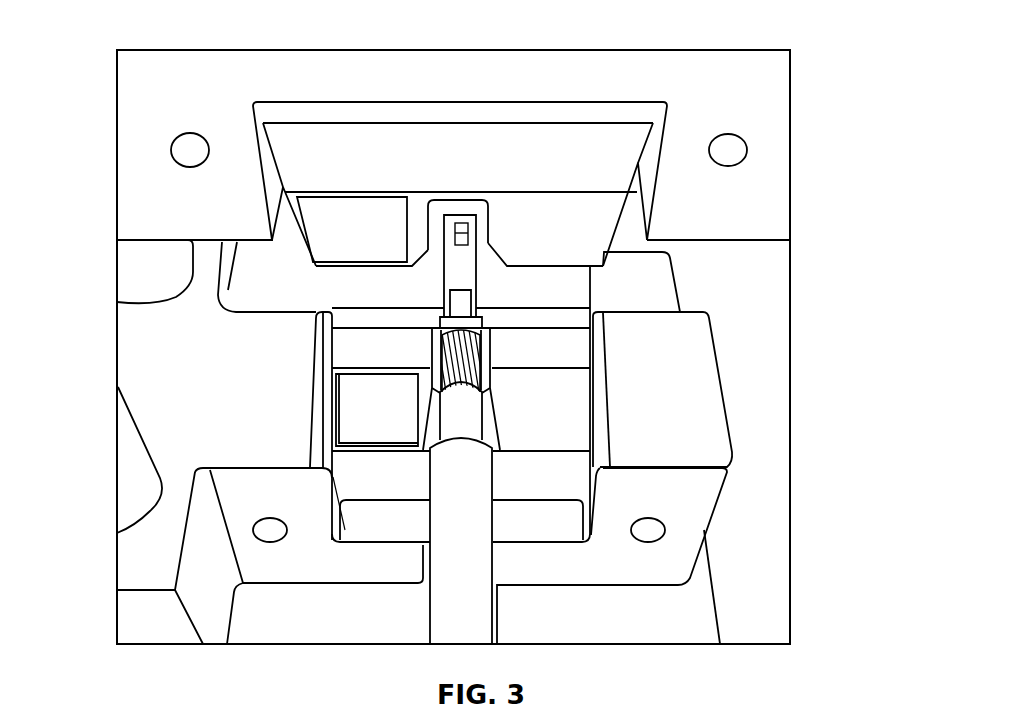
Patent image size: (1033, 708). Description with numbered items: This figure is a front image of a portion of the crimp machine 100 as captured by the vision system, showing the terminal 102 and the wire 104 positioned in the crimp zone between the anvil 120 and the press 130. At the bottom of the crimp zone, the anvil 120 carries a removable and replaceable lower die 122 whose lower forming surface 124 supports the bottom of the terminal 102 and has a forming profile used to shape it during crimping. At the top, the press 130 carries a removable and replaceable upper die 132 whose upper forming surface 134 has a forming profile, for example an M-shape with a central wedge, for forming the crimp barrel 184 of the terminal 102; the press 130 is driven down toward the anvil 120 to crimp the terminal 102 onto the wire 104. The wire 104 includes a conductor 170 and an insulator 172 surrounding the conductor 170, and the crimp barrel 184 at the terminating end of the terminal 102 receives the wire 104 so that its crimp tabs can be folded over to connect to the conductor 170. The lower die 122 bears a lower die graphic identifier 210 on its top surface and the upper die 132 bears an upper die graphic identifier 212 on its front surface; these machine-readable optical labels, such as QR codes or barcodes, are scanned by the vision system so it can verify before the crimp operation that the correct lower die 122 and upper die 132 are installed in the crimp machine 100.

The crimp machine 100 is at (797, 38).
The press 130 is at (767, 113).
The upper die 132 is at (597, 202).
The upper forming surface 134 is at (482, 247).
The terminal 102 is at (457, 265).
The upper die graphic identifier 212 is at (306, 243).
The crimp barrel 184 is at (435, 358).
The lower die graphic identifier 210 is at (382, 417).
The lower forming surface 124 is at (488, 422).
The conductor 170 is at (463, 365).
The insulator 172 is at (457, 417).
The wire 104 is at (443, 588).
The lower die 122 is at (545, 413).
The anvil 120 is at (698, 552).